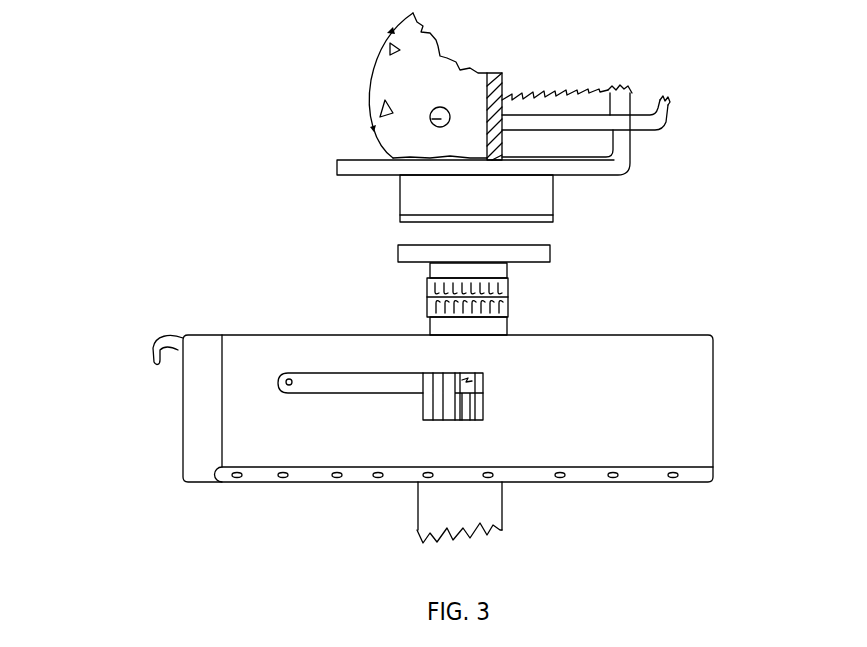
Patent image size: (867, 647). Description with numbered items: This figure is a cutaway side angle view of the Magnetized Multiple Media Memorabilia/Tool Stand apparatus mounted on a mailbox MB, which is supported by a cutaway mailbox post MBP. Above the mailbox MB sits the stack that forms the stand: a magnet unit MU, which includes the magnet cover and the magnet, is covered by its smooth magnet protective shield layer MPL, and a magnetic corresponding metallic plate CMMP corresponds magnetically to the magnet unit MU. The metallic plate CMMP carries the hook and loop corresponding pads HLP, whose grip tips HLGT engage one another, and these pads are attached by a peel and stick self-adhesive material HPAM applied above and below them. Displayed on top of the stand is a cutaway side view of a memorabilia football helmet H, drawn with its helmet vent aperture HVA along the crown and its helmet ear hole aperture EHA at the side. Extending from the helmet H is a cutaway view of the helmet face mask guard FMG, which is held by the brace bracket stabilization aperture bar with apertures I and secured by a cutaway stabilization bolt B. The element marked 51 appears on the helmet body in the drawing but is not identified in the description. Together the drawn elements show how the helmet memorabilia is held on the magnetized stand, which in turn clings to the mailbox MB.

The rotating heating head 51 is at (428, 85).
The helmet vent aperture HVA is at (385, 100).
The helmet ear hole aperture EHA is at (440, 118).
The memorabilia football helmet H is at (430, 42).
The stabilization bolt B is at (502, 78).
The brace bracket stabilization aperture bar with apertures I is at (630, 100).
The helmet face mask guard FMG is at (668, 122).
The magnet unit MU is at (555, 190).
The smooth magnet protective shield layer MPL is at (402, 217).
The magnetic corresponding metallic plate CMMP is at (550, 248).
The peel and stick attachable self-adhesive material HPAM is at (507, 268).
The grip tips HLGT is at (508, 285).
The hook and loop corresponding pads HLP is at (418, 267).
The mailbox MB is at (713, 363).
The mailbox post MBP is at (502, 515).